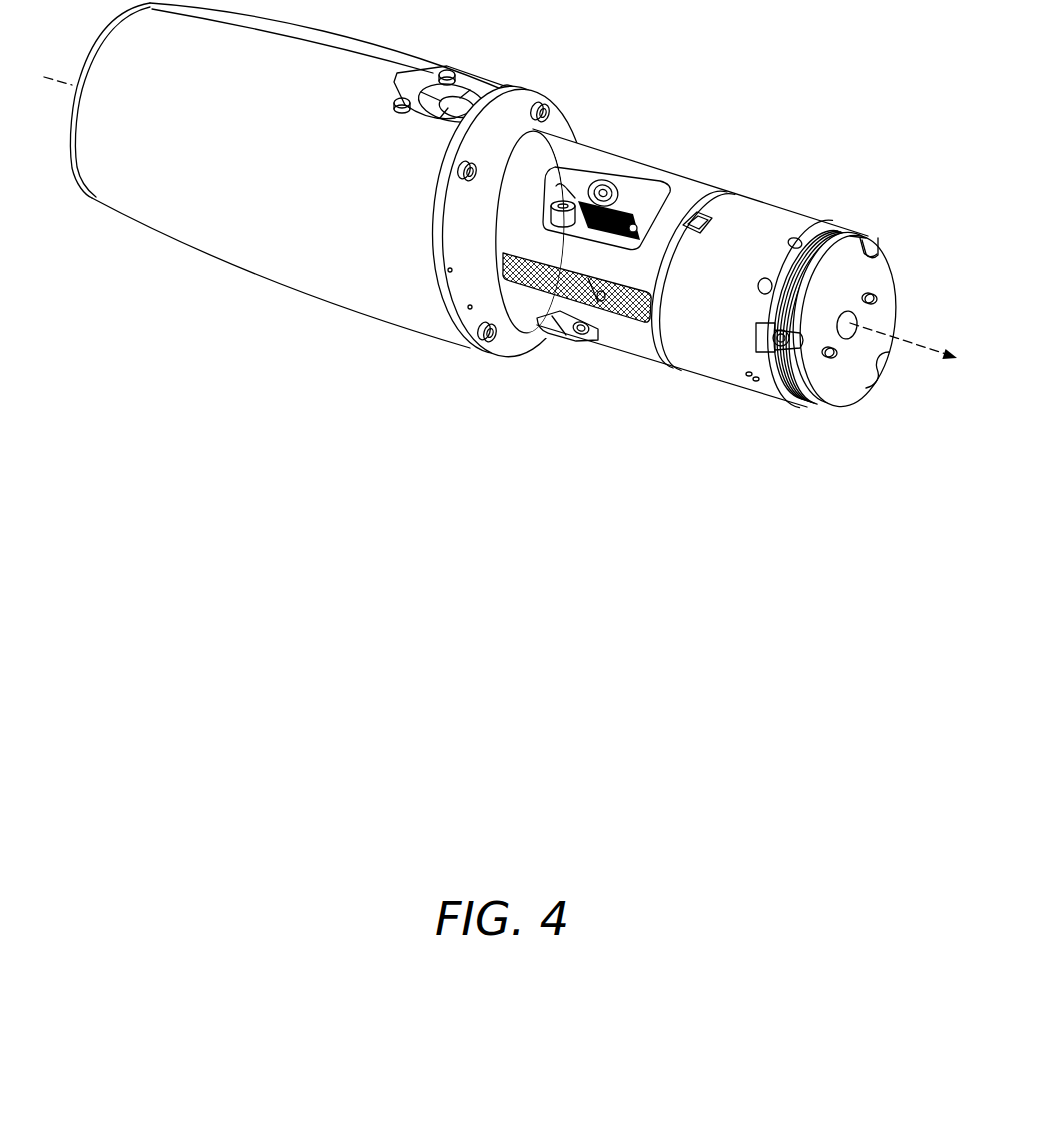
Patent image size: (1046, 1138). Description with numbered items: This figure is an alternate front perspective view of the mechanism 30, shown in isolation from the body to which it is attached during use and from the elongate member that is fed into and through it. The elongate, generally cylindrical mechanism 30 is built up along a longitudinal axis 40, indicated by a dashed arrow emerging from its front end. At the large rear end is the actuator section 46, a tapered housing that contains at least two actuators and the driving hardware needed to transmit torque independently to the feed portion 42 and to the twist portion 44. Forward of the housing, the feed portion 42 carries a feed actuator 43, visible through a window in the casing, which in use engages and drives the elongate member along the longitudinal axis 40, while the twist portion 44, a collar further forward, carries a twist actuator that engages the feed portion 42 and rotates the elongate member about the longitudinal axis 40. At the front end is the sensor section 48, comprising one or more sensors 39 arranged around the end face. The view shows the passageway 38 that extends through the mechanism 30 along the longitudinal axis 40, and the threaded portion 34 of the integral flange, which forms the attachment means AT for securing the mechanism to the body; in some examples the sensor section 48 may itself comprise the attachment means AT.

The mechanism 30 is at (500, 246).
The threaded portion 34 is at (871, 236).
The passageway 38 is at (852, 338).
The sensors 39 is at (829, 364).
The longitudinal axis 40 is at (912, 350).
The feed portion 42 is at (573, 360).
The feed actuator 43 is at (633, 190).
The twist portion 44 is at (700, 398).
The actuator section 46 is at (253, 310).
The sensor section 48 is at (760, 417).
The attachment means AT is at (865, 213).